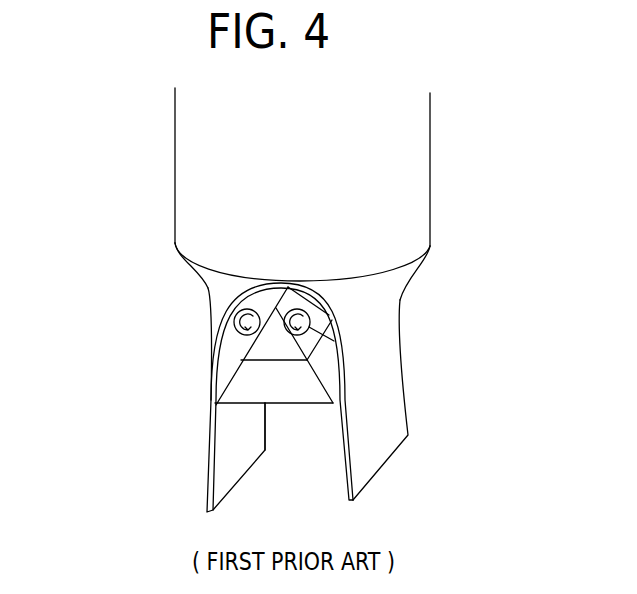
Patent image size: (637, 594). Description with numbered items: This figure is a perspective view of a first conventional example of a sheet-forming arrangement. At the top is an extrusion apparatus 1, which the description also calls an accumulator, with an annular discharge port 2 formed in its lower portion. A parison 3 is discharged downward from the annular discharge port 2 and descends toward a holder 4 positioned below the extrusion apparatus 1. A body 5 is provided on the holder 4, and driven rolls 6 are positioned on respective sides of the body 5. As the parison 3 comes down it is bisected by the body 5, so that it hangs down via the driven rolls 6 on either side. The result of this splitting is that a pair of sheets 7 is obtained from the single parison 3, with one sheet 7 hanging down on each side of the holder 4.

The extrusion apparatus 1 is at (193, 195).
The annular discharge port 2 is at (422, 258).
The parison 3 is at (207, 277).
The holder 4 is at (252, 392).
The body 5 is at (262, 352).
The driven rolls 6 is at (228, 331).
The sheets 7 is at (223, 472).